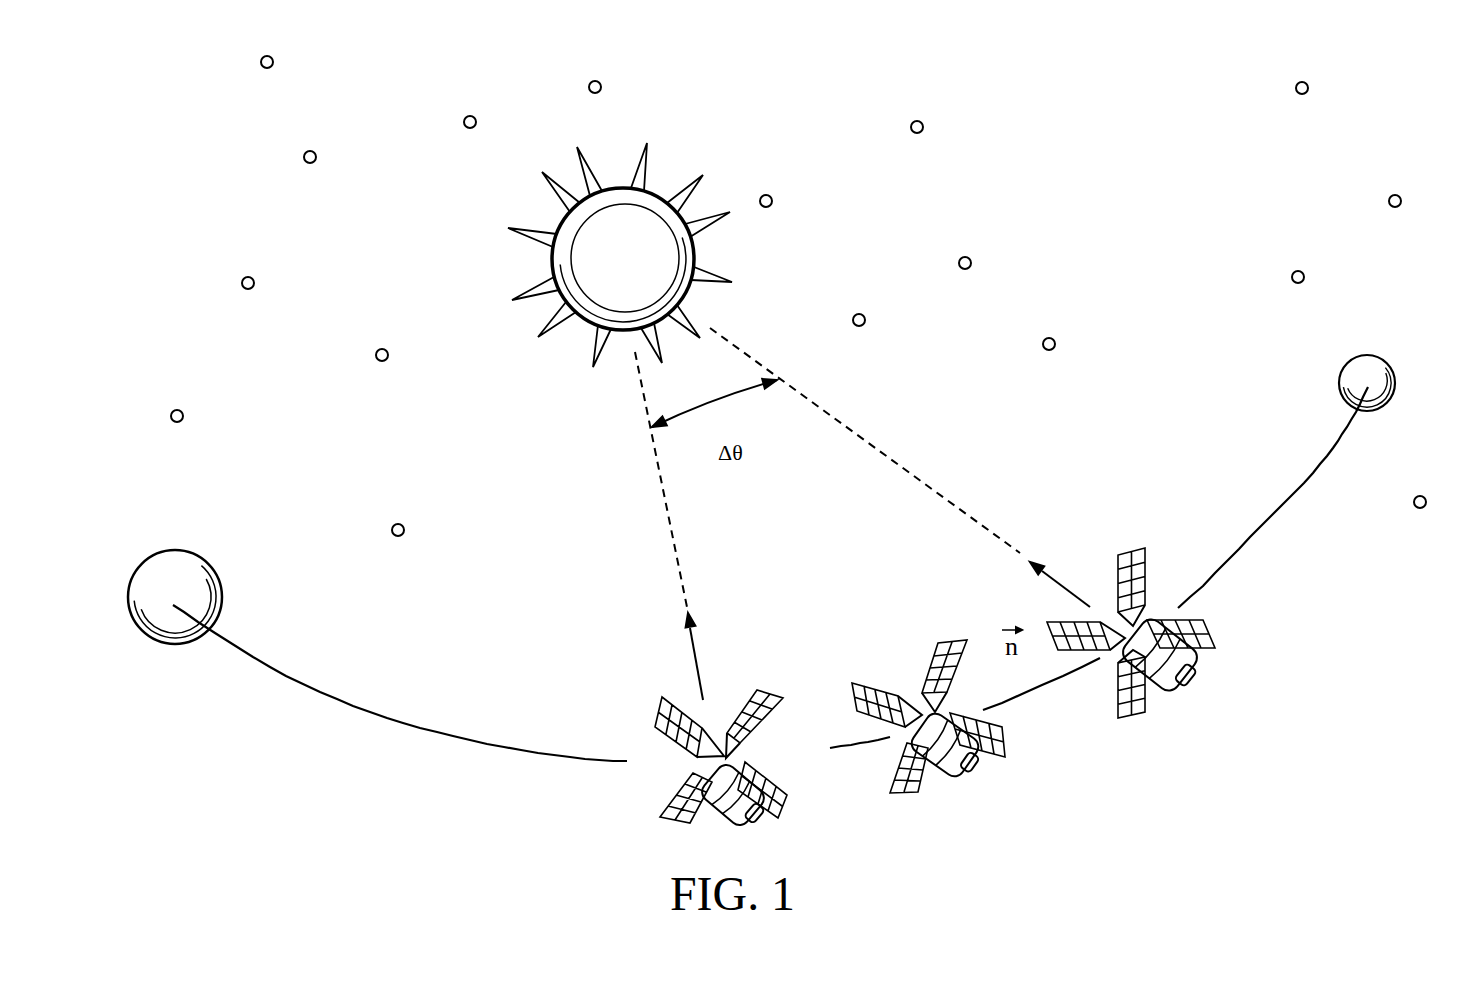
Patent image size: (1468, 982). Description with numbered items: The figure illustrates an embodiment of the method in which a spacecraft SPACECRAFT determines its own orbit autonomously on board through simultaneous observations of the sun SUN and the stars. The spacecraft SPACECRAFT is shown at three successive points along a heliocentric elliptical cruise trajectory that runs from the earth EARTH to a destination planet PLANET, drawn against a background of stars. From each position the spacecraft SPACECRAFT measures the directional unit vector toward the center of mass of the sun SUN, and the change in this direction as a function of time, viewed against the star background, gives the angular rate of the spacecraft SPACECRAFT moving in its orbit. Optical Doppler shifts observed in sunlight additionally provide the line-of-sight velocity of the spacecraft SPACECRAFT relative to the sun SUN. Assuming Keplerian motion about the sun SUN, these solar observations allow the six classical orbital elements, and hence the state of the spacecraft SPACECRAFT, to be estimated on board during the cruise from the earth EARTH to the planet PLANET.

The sun SUN is at (638, 212).
The earth EARTH is at (180, 581).
The planet PLANET is at (1422, 355).
The spacecraft SPACECRAFT is at (935, 690).